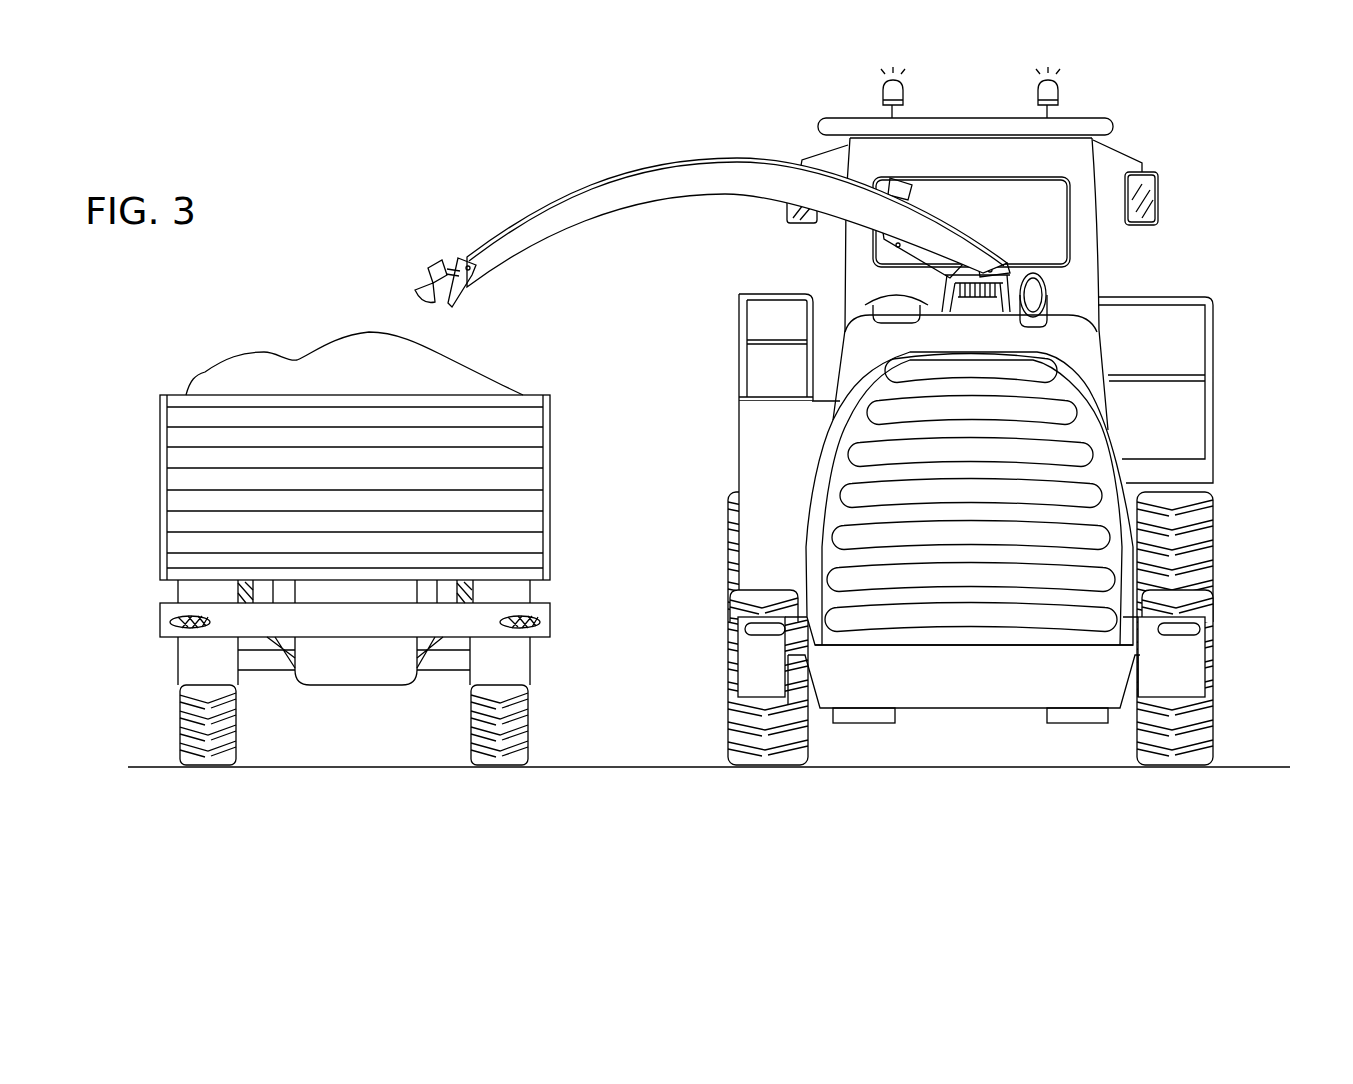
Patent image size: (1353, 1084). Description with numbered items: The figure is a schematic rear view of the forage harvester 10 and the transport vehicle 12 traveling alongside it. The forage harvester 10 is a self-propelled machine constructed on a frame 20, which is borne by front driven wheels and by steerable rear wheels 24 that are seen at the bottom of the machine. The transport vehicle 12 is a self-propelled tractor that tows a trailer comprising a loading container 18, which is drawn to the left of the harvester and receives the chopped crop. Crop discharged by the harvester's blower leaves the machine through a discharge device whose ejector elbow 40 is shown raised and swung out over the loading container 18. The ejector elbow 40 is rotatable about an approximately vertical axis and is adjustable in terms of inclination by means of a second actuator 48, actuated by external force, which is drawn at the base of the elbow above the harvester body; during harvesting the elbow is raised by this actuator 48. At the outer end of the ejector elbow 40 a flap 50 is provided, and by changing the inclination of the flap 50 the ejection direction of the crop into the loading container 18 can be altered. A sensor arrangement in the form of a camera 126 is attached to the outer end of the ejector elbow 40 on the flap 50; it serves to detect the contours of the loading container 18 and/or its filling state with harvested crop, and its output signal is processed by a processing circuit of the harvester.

The forage harvester 10 is at (811, 501).
The transport vehicle 12 is at (393, 649).
The loading container 18 is at (549, 443).
The frame 20 is at (1107, 440).
The rear wheels 24 is at (740, 603).
The ejector elbow 40 is at (655, 185).
The second actuator 48 is at (905, 253).
The flap 50 is at (466, 286).
The camera 126 is at (429, 266).